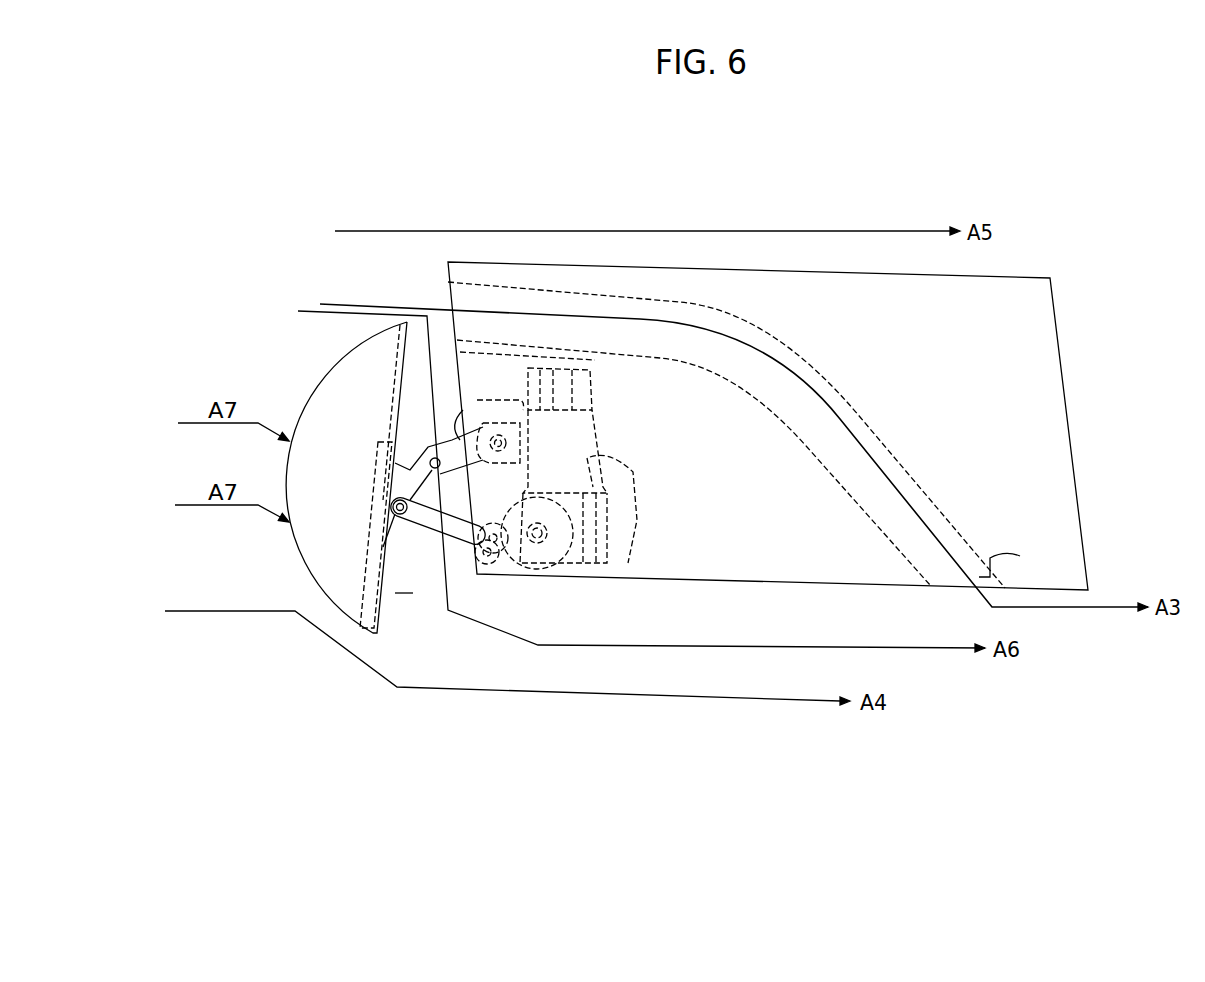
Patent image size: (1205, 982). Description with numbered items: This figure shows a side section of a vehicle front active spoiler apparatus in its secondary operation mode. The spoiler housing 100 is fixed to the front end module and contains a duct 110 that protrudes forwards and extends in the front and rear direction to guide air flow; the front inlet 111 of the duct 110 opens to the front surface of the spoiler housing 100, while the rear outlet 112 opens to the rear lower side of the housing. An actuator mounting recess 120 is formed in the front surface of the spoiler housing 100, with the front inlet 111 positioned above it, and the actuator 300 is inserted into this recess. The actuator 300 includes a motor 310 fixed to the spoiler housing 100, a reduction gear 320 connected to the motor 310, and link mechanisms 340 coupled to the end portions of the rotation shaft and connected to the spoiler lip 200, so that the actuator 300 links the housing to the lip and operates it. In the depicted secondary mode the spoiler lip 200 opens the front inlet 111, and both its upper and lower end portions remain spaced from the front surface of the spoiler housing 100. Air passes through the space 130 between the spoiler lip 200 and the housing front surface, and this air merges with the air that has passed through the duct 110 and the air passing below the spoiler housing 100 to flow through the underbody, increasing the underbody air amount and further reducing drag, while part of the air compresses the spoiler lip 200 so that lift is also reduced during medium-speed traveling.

The spoiler housing 100 is at (1035, 362).
The duct 110 is at (880, 437).
The front inlet 111 is at (463, 272).
The rear outlet 112 is at (1020, 556).
The actuator mounting recess 120 is at (566, 370).
The space 130 is at (405, 595).
The spoiler lip 200 is at (323, 553).
The actuator 300 is at (470, 426).
The motor 310 is at (634, 475).
The reduction gear 320 is at (550, 555).
The link mechanisms 340 is at (428, 320).